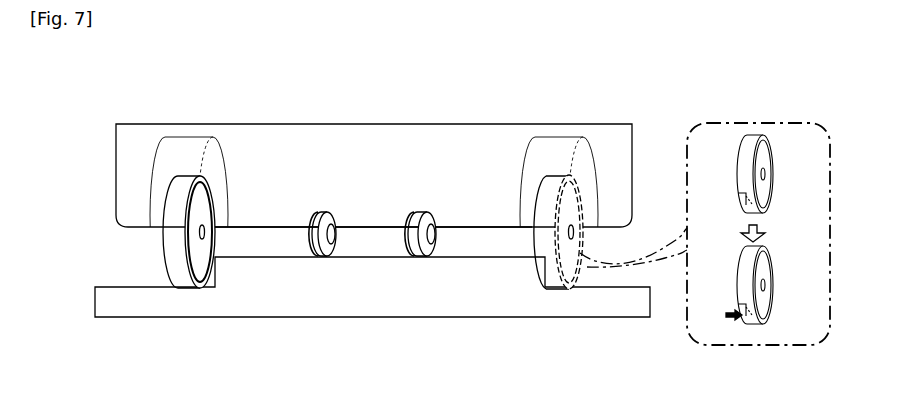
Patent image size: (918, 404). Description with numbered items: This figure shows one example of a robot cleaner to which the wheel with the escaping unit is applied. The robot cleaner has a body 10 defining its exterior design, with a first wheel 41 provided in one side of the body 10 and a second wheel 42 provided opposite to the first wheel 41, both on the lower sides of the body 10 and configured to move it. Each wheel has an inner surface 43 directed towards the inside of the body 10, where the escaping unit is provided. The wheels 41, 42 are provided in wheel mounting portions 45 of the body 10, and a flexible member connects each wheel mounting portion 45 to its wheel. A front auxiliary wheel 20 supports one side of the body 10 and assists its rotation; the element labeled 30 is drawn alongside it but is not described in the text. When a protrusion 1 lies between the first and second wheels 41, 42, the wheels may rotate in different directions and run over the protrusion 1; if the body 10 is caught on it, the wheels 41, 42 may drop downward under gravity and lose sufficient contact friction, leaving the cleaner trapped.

The protrusion 1 is at (271, 262).
The body 10 is at (371, 124).
The front auxiliary wheel 20 is at (372, 290).
The ring member 30 is at (426, 257).
The first wheel 41 is at (176, 272).
The second wheel 42 is at (540, 238).
The inner surface 43 is at (202, 264).
The wheel mounting portion 45 is at (160, 145).